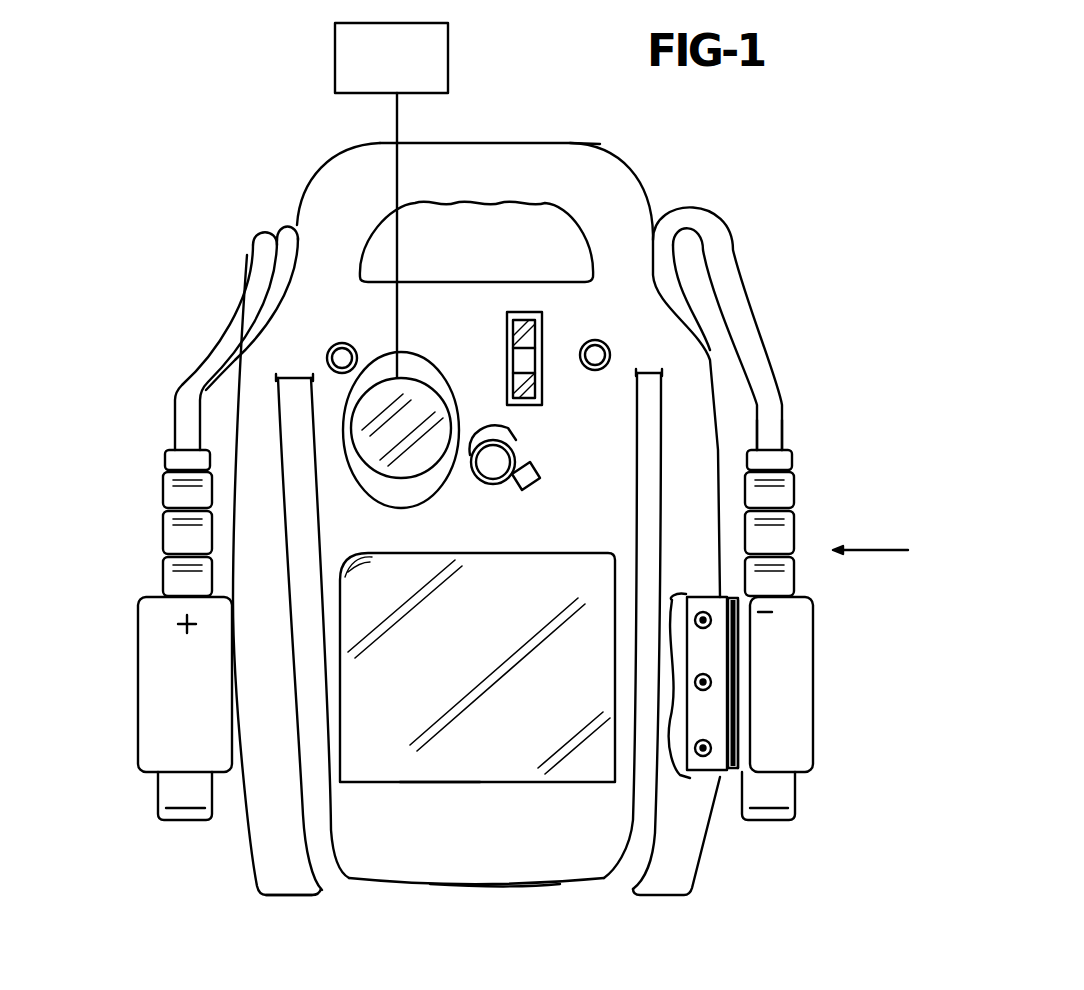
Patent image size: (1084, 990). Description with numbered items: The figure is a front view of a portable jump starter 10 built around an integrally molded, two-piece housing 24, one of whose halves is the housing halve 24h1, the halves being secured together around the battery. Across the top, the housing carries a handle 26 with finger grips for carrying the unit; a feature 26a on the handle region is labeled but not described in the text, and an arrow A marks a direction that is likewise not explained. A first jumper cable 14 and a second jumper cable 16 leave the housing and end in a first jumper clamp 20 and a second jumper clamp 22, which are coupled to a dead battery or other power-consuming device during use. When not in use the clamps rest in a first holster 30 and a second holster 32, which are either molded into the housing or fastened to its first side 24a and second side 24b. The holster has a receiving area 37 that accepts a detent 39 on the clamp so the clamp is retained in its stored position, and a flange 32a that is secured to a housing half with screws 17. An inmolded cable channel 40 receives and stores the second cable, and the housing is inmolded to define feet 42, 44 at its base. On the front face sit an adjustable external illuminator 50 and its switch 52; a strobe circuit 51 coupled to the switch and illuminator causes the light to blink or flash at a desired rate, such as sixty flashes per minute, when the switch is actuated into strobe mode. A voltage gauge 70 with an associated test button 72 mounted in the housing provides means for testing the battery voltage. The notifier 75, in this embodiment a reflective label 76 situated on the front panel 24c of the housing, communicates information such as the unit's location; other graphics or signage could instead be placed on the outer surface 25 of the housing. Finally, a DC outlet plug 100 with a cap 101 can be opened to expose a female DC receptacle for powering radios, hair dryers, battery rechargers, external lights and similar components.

The portable jump starter 10 is at (790, 305).
The first jumper cable 14 is at (262, 258).
The second jumper cable 16 is at (738, 280).
The screws 17 is at (696, 747).
The first jumper clamp 20 is at (176, 806).
The second jumper clamp 22 is at (796, 790).
The housing 24 is at (232, 414).
The first side 24a is at (232, 648).
The second side 24b is at (772, 466).
The front panel 24c is at (520, 861).
The housing halve 24h1 is at (527, 886).
The outer surface 25 is at (710, 430).
The handle 26 is at (503, 143).
The translucent lamp dome 26a is at (493, 197).
The first holster 30 is at (138, 725).
The second holster 32 is at (815, 690).
The flange 32a is at (700, 595).
The receiving area 37 is at (730, 727).
The detent 39 is at (730, 693).
The cable channel 40 is at (665, 243).
The foot 42 is at (287, 893).
The foot 44 is at (668, 893).
The adjustable external illuminator 50 is at (423, 378).
The strobe circuit 51 is at (334, 68).
The switch 52 is at (340, 343).
The voltage gauge 70 is at (508, 312).
The test button 72 is at (595, 340).
The notifier 75 is at (440, 790).
The reflective label 76 is at (543, 556).
The DC outlet plug 100 is at (518, 460).
The cap 101 is at (480, 428).
The viewing direction arrow A is at (873, 550).